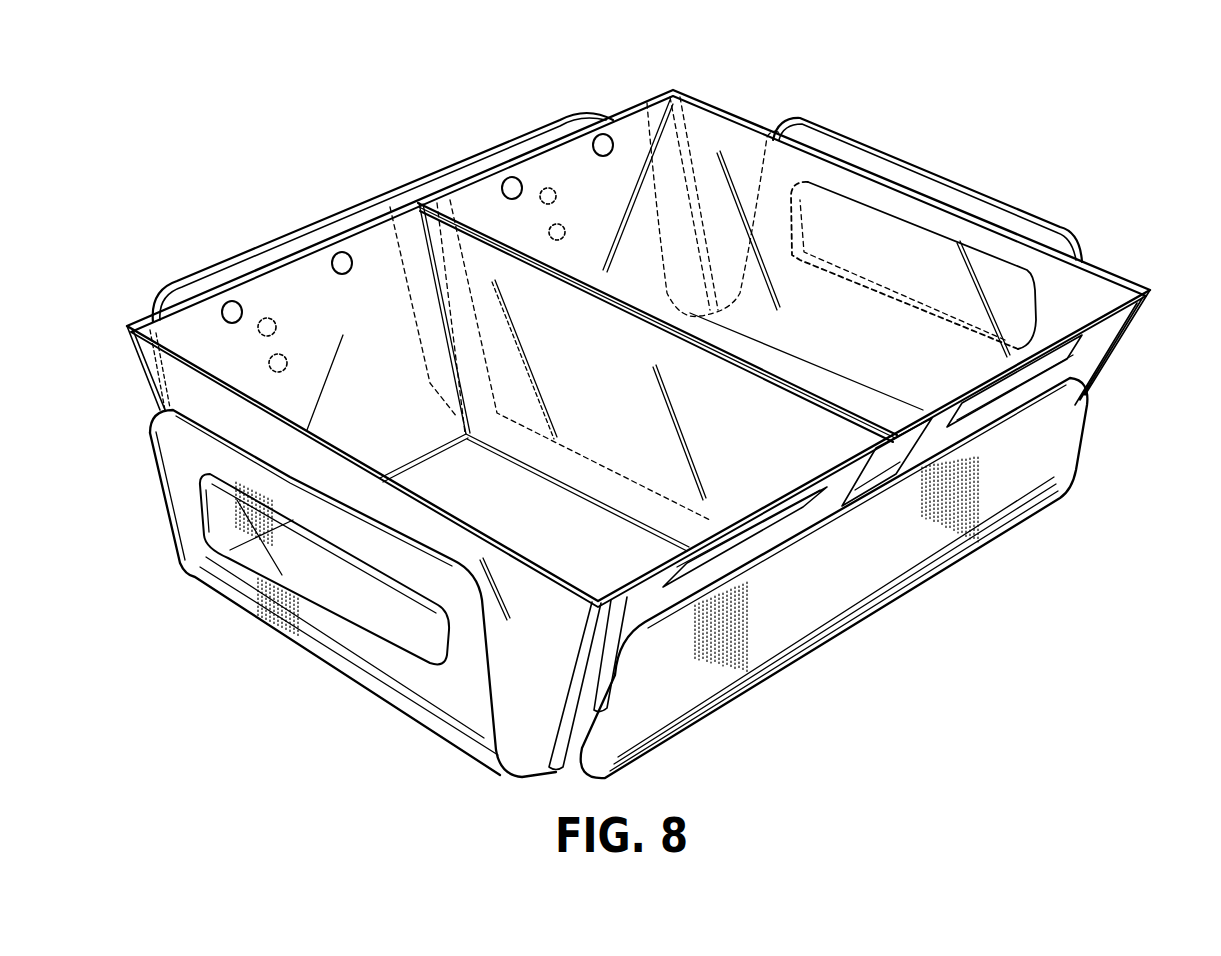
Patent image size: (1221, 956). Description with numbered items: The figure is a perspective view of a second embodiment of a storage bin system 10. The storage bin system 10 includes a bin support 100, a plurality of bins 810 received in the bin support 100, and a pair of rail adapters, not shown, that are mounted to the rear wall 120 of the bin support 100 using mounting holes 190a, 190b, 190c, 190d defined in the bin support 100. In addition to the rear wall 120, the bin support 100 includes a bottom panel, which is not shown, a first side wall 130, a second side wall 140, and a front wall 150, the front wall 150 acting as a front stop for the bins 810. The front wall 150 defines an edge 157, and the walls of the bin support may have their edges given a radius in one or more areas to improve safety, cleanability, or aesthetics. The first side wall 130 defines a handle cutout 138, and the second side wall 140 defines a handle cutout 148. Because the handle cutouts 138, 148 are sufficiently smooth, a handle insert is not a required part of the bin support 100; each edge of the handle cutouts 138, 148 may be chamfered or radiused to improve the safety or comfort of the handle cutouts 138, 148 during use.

The storage bin system 10 is at (190, 145).
The bin support 100 is at (887, 555).
The rear wall 120 is at (520, 153).
The first side wall 130 is at (447, 707).
The handle cutout 138 is at (327, 617).
The second side wall 140 is at (823, 142).
The handle cutout 148 is at (890, 297).
The front wall 150 is at (990, 487).
The edge 157 is at (760, 563).
The bins 810 is at (1097, 328).
The mounting hole 190a is at (272, 318).
The mounting hole 190b is at (290, 355).
The mounting hole 190c is at (550, 187).
The mounting hole 190d is at (565, 229).